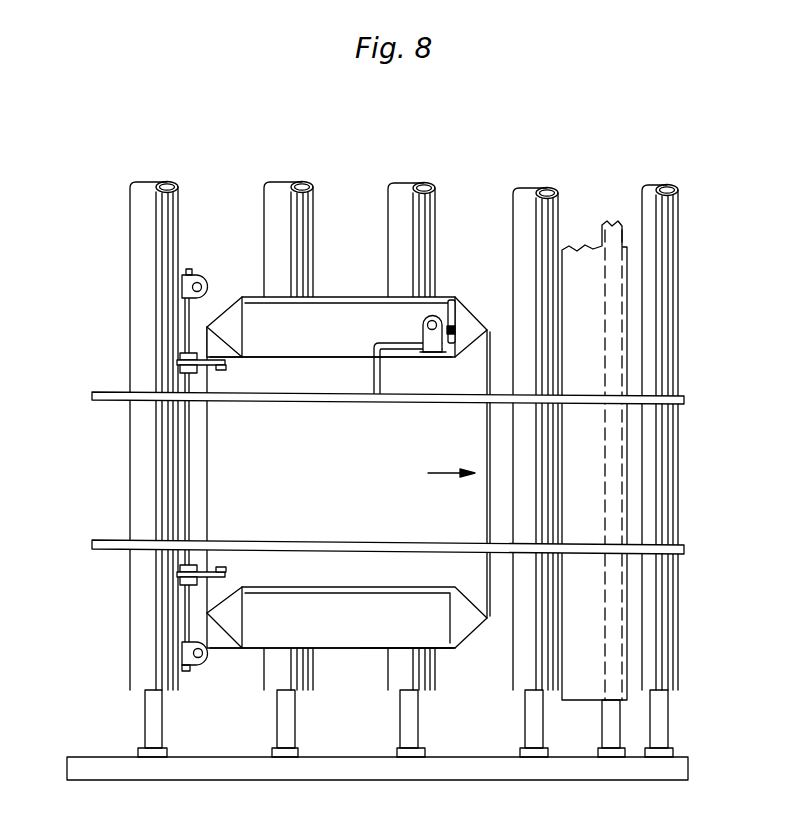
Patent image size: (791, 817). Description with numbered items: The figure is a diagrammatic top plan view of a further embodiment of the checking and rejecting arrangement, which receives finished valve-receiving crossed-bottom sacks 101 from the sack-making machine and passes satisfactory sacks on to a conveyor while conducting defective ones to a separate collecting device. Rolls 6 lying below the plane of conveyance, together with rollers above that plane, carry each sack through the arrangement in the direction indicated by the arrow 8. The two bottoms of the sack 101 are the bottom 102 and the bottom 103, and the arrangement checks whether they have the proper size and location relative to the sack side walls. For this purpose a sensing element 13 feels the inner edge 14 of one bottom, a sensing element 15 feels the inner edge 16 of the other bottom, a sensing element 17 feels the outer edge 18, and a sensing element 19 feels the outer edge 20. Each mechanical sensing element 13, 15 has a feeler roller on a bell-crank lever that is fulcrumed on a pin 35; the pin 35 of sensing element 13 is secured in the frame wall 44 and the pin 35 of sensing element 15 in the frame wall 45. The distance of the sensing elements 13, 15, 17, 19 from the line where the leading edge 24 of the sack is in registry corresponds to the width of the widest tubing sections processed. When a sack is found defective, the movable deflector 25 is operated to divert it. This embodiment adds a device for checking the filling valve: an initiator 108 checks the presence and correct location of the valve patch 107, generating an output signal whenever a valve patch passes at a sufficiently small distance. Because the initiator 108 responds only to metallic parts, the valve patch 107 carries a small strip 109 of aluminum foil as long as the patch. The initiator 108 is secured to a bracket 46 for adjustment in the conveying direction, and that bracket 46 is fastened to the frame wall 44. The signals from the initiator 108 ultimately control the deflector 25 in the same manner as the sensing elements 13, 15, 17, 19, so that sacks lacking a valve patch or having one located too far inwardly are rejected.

The rolls 6 is at (277, 210).
The arrow 8 is at (436, 476).
The sensing element 13 is at (233, 366).
The inner edge of bottom 14 is at (303, 353).
The sensing element 15 is at (233, 570).
The inner edge of bottom 16 is at (347, 611).
The sensing element 17 is at (209, 276).
The outer edge of bottom 18 is at (361, 296).
The sensing element 19 is at (204, 663).
The outer edge of bottom 20 is at (377, 650).
The leading edge 24 is at (488, 503).
The deflector 25 is at (586, 270).
The pin 35 is at (187, 333).
The inner wall of machine frame 44 is at (105, 393).
The inner wall of machine frame 45 is at (105, 542).
The bracket 46 is at (373, 374).
The valved crossed-bottom sack 101 is at (256, 472).
The bottom 102 is at (347, 329).
The bottom 103 is at (350, 632).
The valve patch 107 is at (452, 318).
The initiator 108 is at (433, 345).
The strip of aluminum foil 109 is at (456, 328).